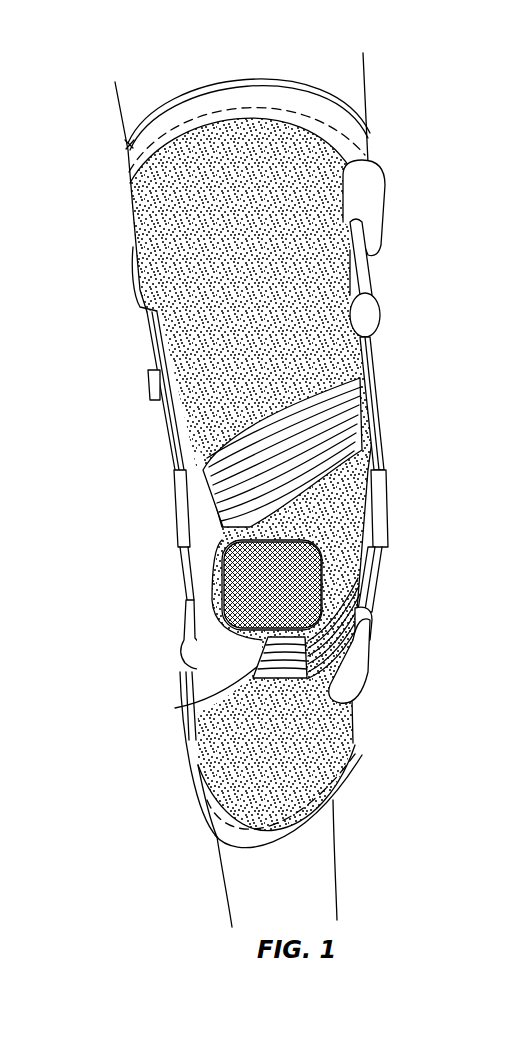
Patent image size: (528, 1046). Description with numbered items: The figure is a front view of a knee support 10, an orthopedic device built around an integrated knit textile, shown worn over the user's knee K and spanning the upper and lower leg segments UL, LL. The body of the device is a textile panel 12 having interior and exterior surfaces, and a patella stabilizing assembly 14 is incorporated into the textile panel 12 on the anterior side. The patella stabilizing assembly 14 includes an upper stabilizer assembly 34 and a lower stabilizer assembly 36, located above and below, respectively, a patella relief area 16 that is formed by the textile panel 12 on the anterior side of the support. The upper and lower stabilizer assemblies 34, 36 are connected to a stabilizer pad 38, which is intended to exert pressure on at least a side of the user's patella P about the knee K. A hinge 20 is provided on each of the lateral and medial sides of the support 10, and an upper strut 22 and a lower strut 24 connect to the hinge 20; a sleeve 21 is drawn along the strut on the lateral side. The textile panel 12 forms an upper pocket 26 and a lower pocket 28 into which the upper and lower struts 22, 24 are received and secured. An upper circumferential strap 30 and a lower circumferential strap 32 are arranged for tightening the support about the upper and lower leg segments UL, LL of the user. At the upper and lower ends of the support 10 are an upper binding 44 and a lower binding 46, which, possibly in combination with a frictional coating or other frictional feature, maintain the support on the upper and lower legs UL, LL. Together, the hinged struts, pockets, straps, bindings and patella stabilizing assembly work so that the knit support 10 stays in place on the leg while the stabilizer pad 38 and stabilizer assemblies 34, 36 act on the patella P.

The knee support 10 is at (382, 354).
The textile panel 12 is at (133, 284).
The patella stabilizing assembly 14 is at (349, 478).
The patella relief area 16 is at (312, 578).
The hinge 20 is at (178, 495).
The hinge arm sleeve 21 is at (383, 512).
The upper strut 22 is at (385, 447).
The lower strut 24 is at (372, 587).
The upper pocket 26 is at (375, 190).
The lower pocket 28 is at (358, 670).
The upper circumferential strap 30 is at (127, 143).
The lower circumferential strap 32 is at (220, 840).
The upper stabilizer assembly 34 is at (357, 425).
The lower stabilizer assembly 36 is at (352, 641).
The stabilizer pad 38 is at (206, 532).
The upper binding 44 is at (298, 102).
The lower binding 46 is at (313, 812).
The knee K is at (232, 590).
The patella P is at (175, 708).
The upper leg segment UL is at (366, 90).
The lower leg segment LL is at (322, 873).